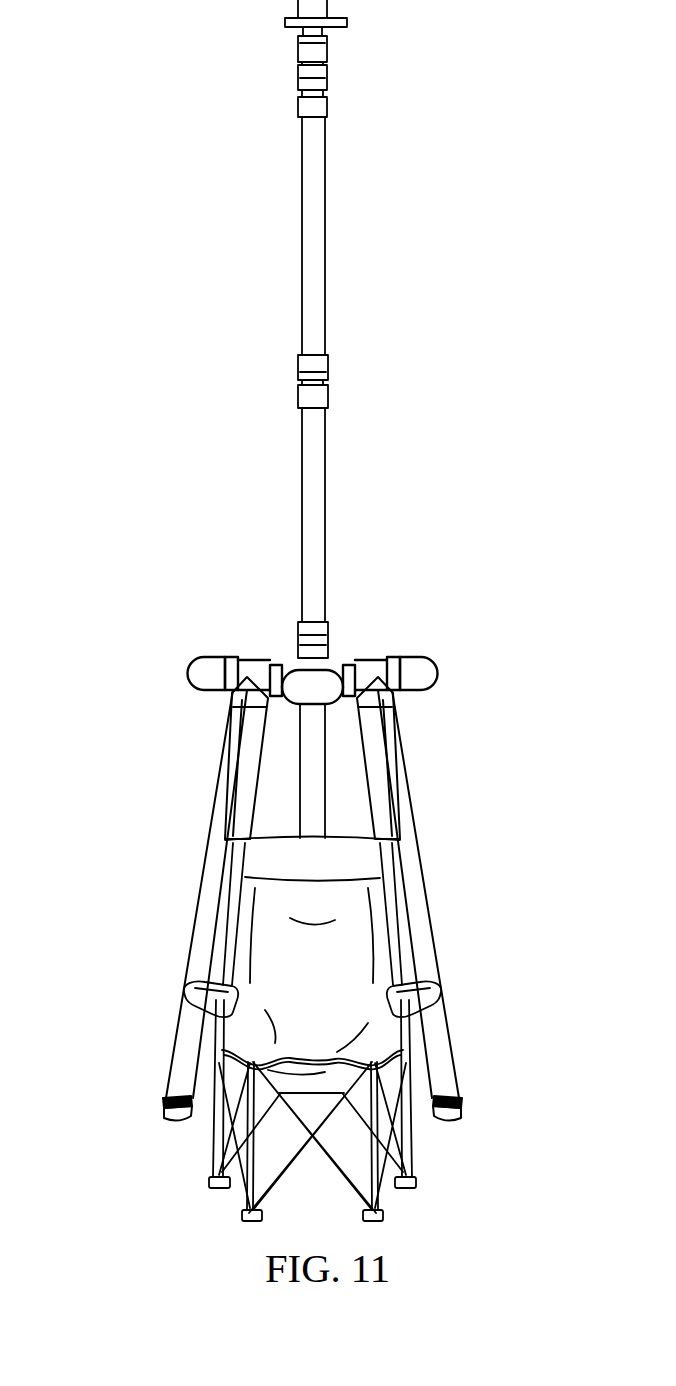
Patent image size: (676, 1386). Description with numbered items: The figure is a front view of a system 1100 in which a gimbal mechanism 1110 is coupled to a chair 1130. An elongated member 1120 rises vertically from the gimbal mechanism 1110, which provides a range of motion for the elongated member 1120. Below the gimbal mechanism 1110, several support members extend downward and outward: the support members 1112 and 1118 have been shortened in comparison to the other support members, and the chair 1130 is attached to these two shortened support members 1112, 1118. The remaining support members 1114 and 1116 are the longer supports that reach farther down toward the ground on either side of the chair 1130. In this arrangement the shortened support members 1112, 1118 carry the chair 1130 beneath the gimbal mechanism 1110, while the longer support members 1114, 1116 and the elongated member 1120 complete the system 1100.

The system 1100 is at (113, 240).
The gimbal mechanism 1110 is at (372, 657).
The support member 1112 is at (388, 766).
The support member 1114 is at (207, 912).
The support member 1116 is at (430, 927).
The support member 1118 is at (237, 802).
The elongated member 1120 is at (325, 513).
The chair 1130 is at (423, 1142).